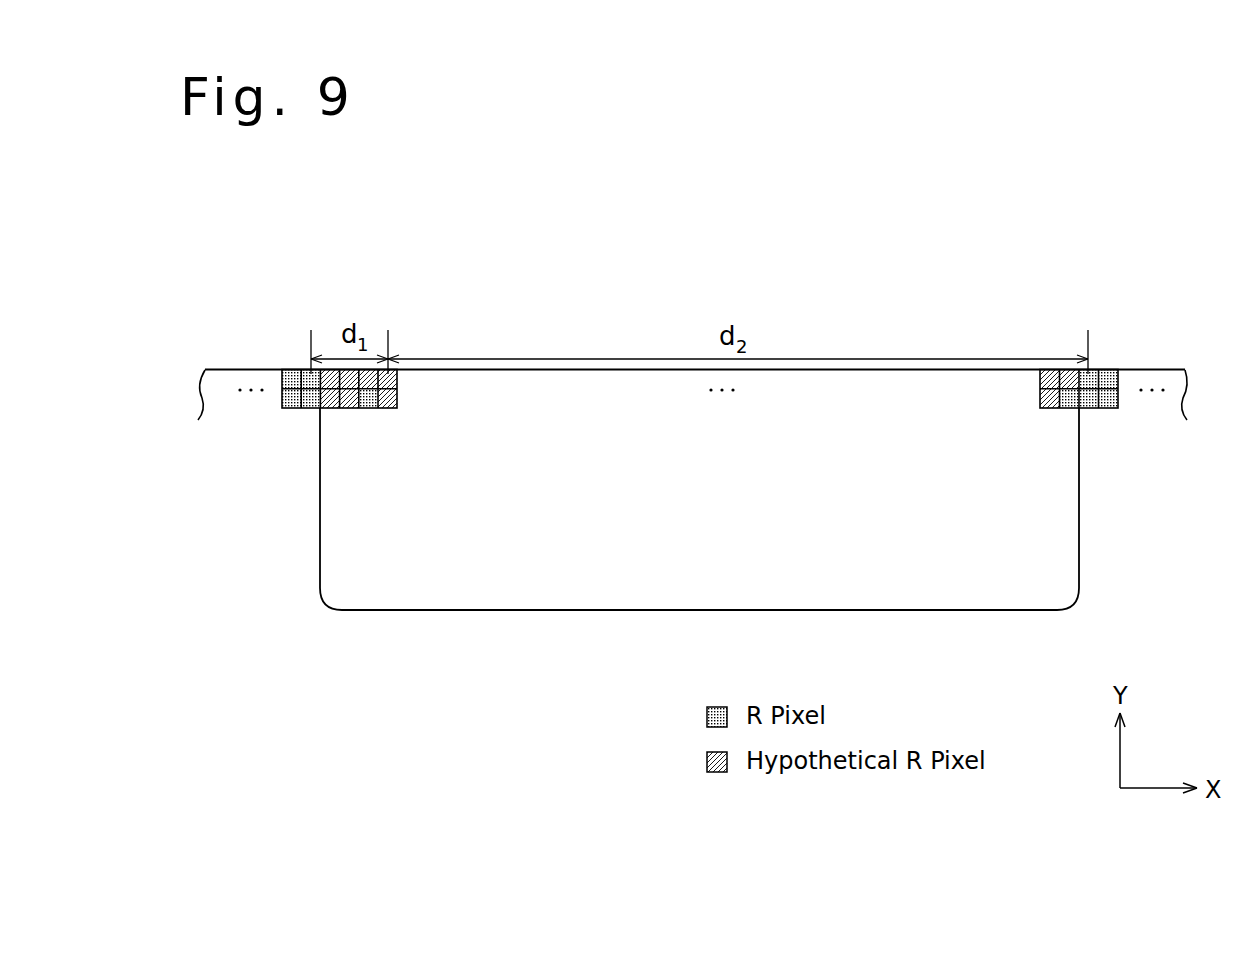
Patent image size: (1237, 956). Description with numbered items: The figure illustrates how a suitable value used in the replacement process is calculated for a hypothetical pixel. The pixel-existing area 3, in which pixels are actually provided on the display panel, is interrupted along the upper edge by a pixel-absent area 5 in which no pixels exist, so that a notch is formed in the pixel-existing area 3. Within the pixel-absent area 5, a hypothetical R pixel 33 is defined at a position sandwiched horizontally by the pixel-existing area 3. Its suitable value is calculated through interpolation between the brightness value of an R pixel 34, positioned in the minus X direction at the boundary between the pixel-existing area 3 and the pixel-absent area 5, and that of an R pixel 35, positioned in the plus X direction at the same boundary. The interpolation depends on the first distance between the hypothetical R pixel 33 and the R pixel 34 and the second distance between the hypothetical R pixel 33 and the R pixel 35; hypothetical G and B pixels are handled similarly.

The pixel-existing area 3 is at (223, 384).
The pixel-absent area 5 is at (581, 386).
The hypothetical R pixel 33 is at (398, 378).
The R pixel 34 is at (309, 371).
The R pixel 35 is at (1090, 372).